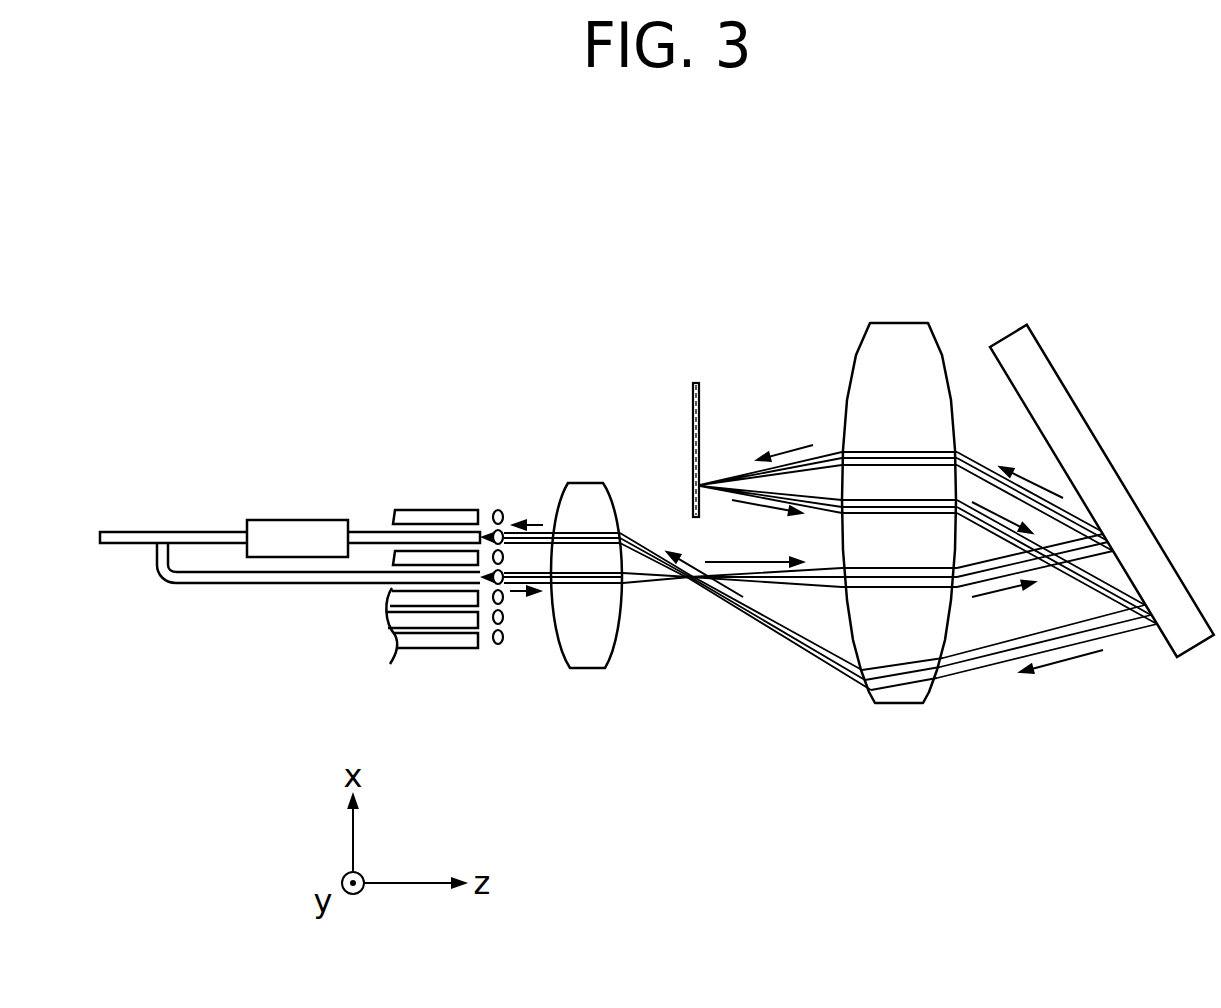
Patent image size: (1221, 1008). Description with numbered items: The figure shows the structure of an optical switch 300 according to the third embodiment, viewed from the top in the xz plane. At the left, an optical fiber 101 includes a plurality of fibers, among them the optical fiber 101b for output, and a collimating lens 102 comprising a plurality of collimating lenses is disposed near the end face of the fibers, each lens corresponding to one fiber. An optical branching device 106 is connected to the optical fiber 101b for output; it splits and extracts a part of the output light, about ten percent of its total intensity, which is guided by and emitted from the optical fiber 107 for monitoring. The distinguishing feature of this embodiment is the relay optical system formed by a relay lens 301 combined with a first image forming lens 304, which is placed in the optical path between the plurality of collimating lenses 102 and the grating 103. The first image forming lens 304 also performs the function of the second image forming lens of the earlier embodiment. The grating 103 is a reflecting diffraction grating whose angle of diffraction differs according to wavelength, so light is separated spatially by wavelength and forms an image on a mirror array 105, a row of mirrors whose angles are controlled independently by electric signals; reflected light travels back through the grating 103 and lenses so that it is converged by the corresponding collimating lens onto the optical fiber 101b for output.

The optical fiber 101 is at (440, 493).
The optical fiber for output 101b is at (372, 532).
The collimating lens 102 is at (498, 510).
The grating 103 is at (1012, 330).
The mirror array 105 is at (691, 381).
The optical branching device 106 is at (282, 520).
The optical fiber for monitoring 107 is at (283, 587).
The optical switch 300 is at (722, 298).
The relay lens 301 is at (588, 669).
The first image forming lens 304 is at (900, 322).